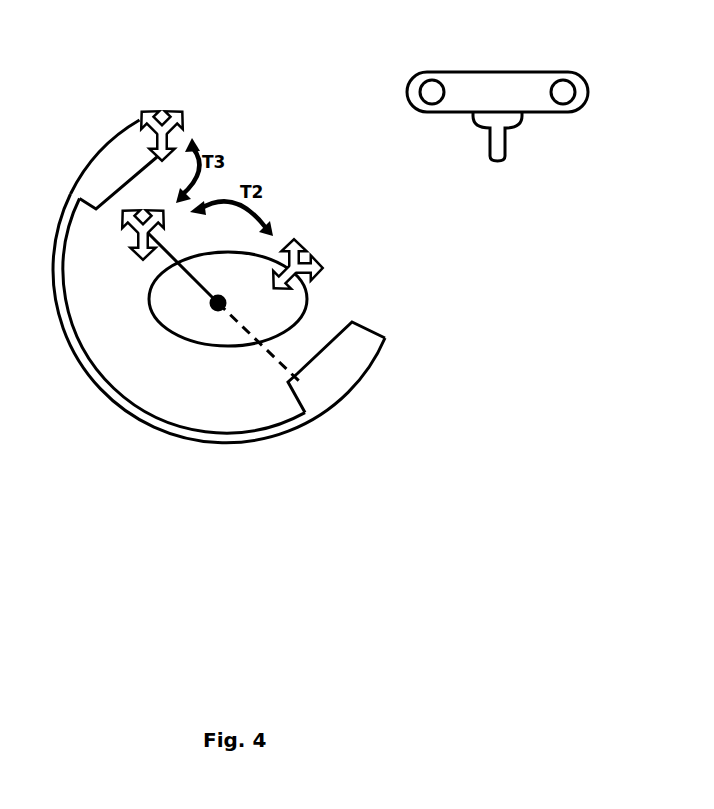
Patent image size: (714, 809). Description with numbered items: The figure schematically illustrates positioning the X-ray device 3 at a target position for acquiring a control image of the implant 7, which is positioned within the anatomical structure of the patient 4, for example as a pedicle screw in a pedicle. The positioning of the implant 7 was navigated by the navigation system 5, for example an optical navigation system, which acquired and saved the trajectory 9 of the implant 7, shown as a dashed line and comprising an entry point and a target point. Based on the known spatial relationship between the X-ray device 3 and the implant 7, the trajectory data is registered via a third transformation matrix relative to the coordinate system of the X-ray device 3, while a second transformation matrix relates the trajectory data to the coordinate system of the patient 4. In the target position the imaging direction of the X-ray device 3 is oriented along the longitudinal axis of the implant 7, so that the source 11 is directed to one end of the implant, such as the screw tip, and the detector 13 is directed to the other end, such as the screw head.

The X-ray device 3 is at (362, 348).
The patient 4 is at (187, 317).
The navigation system 5 is at (502, 92).
The implant 7 is at (165, 252).
The trajectory 9 is at (288, 367).
The source 11 is at (322, 398).
The detector 13 is at (102, 178).